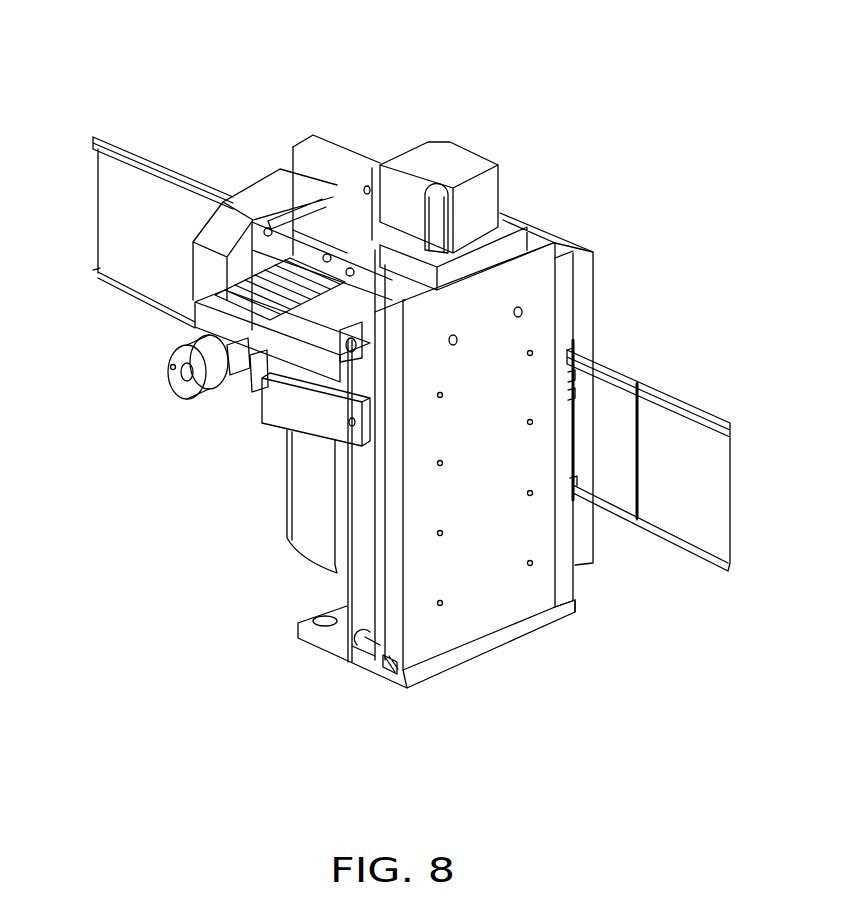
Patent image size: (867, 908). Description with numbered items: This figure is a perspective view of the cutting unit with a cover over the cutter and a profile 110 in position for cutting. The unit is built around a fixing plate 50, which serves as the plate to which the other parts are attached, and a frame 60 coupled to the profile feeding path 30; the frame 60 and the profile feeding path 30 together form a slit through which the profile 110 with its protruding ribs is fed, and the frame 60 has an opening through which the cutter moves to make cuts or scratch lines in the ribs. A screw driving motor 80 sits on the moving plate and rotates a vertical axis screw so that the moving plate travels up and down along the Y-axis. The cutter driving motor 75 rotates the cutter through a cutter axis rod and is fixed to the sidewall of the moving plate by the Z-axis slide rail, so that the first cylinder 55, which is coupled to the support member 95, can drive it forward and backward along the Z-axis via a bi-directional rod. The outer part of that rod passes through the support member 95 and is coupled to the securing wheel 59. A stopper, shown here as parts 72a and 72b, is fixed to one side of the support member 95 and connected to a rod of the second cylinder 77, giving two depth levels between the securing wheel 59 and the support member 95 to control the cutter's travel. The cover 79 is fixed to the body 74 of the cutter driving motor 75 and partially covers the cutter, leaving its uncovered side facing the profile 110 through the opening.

The profile feeding path 30 is at (343, 140).
The body of the cutter driving motor 74 is at (339, 229).
The screw driving motor 80 is at (467, 152).
The cover 79 is at (279, 189).
The support member 95 is at (197, 328).
The first cylinder 55 is at (240, 303).
The securing wheel 59 is at (182, 382).
The first clamp 72a is at (232, 382).
The second clamp 72b is at (256, 383).
The second cylinder 77 is at (327, 423).
The cutter driving motor 75 is at (307, 535).
The fixing plate 50 is at (498, 603).
The frame 60 is at (568, 580).
The profile 110 is at (687, 402).